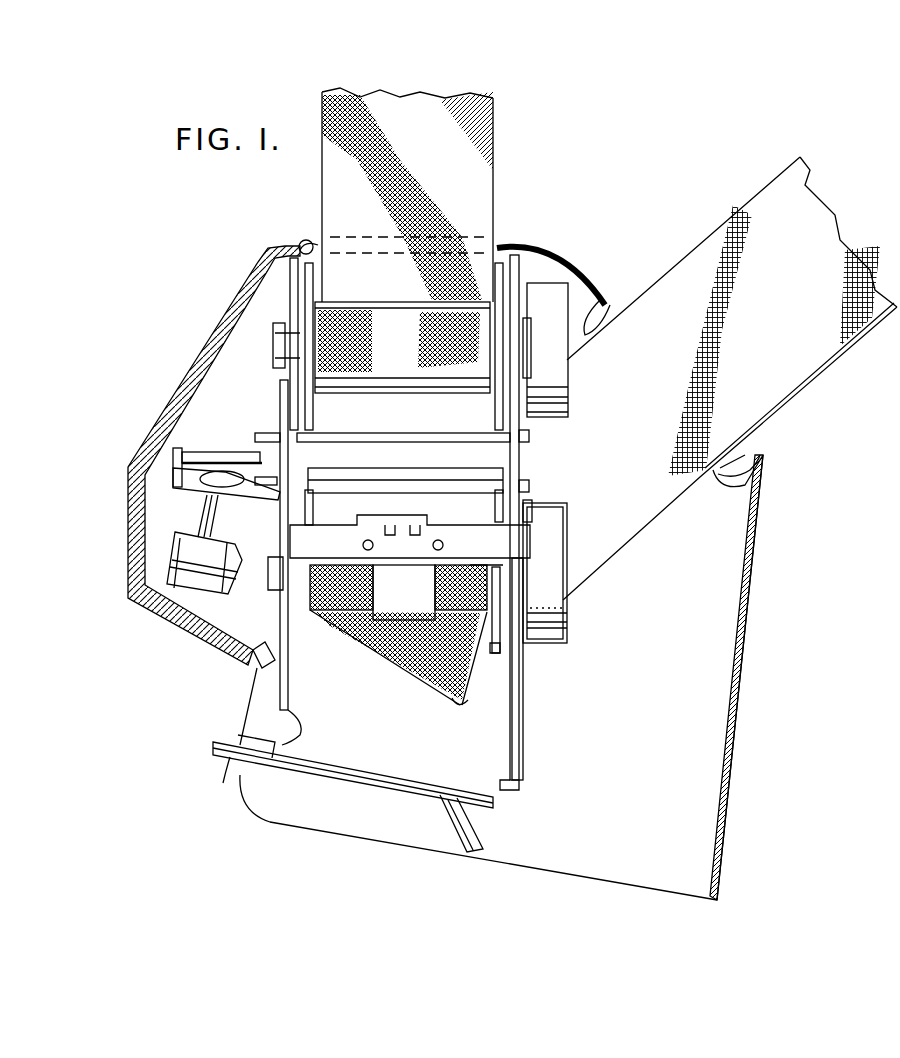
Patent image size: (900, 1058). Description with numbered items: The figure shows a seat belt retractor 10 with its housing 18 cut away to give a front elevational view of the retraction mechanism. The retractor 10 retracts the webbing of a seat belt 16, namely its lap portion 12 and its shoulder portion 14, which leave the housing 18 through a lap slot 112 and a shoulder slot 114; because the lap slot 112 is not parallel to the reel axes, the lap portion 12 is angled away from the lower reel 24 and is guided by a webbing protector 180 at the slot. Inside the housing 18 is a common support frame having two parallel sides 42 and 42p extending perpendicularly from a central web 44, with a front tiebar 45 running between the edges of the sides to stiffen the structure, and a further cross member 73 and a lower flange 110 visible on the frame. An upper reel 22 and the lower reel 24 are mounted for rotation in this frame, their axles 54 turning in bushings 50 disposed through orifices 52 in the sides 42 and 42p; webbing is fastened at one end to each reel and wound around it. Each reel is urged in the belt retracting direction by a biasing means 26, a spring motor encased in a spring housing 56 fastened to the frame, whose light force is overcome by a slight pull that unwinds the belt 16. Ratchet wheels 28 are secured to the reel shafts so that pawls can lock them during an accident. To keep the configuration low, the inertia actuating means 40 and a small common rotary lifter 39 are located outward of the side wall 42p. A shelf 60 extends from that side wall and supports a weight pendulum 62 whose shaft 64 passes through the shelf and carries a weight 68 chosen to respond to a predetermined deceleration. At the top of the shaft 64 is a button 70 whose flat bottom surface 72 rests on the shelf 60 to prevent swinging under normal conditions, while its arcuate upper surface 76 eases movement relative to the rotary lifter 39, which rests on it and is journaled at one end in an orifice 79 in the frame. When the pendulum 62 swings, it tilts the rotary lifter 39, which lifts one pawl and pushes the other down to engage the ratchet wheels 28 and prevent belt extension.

The seat belt retractor 10 is at (780, 546).
The lap portion 12 is at (806, 362).
The shoulder portion 14 is at (495, 190).
The seat belt 16 is at (495, 148).
The housing 18 is at (735, 800).
The upper reel 22 is at (408, 380).
The lower reel 24 is at (340, 620).
The biasing means 26 is at (565, 635).
The ratchet wheels 28 is at (500, 652).
The rotary lifter 39 is at (233, 452).
The inertia actuating means 40 is at (158, 445).
The side 42 is at (520, 748).
The side wall 42p is at (283, 635).
The central web 44 is at (352, 745).
The front tiebar 45 is at (530, 545).
The bushings 50 is at (282, 368).
The orifices 52 is at (290, 315).
The axles 54 is at (285, 345).
The spring housing 56 is at (565, 607).
The shelf 60 is at (252, 500).
The weight pendulum 62 is at (185, 525).
The shaft 64 is at (204, 544).
The weight 68 is at (215, 691).
The button 70 is at (150, 476).
The bottom surface 72 is at (230, 495).
The cross bar 73 is at (410, 536).
The upper surface 76 is at (210, 452).
The orifice 79 is at (262, 458).
The flange 110 is at (222, 760).
The lap slot 112 is at (620, 300).
The shoulder slot 114 is at (300, 242).
The outlet 180 is at (465, 695).